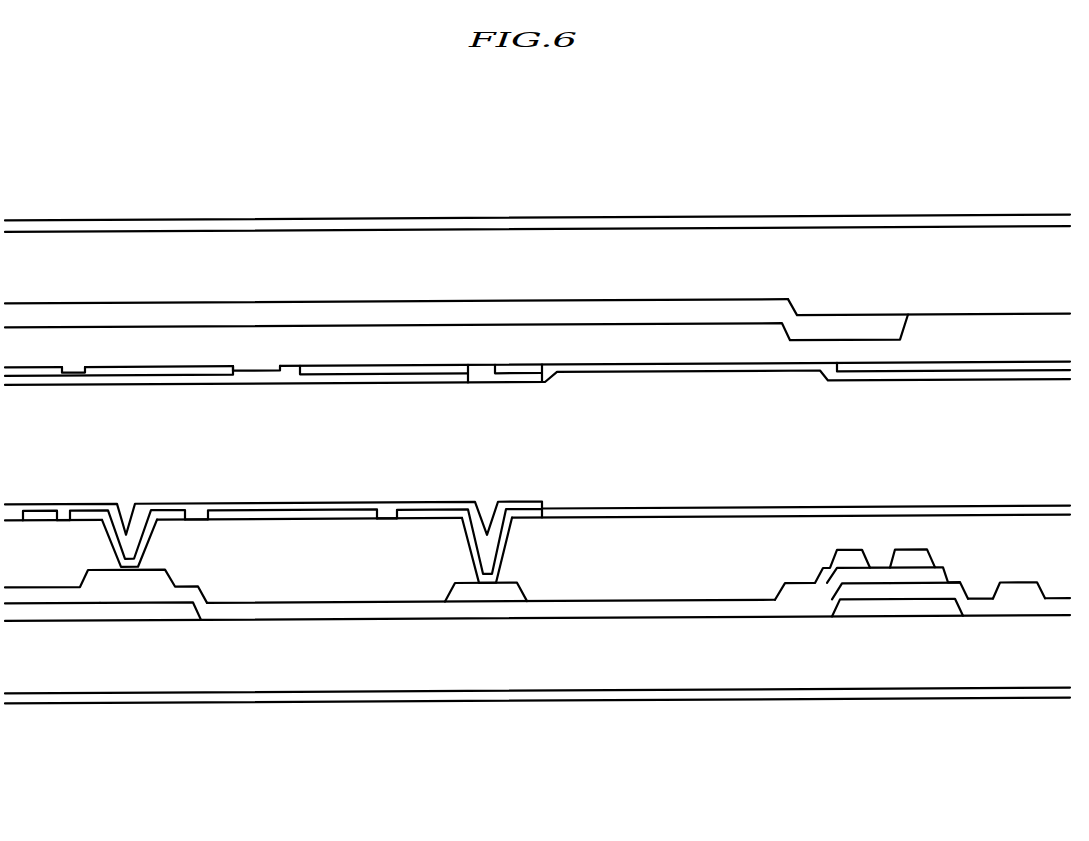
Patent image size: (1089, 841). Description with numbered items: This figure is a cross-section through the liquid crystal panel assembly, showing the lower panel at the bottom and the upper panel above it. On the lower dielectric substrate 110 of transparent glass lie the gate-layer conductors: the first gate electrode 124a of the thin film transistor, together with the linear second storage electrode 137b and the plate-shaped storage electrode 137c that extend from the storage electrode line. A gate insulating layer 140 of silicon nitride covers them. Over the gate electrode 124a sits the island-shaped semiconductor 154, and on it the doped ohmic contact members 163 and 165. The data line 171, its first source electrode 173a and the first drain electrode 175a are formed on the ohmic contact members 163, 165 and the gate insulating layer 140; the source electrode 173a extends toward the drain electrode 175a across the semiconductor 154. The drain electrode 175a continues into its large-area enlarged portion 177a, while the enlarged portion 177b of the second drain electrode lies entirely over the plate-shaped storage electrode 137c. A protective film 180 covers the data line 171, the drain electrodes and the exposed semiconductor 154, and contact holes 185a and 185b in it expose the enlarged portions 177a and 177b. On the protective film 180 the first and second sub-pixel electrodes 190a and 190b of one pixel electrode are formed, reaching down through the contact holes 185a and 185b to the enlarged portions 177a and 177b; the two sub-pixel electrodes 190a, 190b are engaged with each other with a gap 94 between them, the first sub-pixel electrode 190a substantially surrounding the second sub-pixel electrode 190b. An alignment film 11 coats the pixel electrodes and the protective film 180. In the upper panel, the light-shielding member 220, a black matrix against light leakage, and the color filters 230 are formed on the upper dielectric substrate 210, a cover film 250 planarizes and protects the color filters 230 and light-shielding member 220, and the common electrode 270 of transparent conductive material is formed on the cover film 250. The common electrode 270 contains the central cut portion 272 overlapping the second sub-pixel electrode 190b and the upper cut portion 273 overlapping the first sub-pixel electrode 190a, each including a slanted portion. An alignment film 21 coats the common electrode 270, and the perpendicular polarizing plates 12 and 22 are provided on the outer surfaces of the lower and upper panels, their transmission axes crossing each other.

The polarizing plate 22 is at (278, 220).
The dielectric substrate 210 is at (397, 253).
The color filter 230 is at (470, 312).
The light-shielding member 220 is at (932, 305).
The cover film 250 is at (200, 340).
The common electrode 270 is at (35, 375).
The central cut portion 272 is at (64, 373).
The upper cut portion 273 is at (471, 373).
The alignment film 21 is at (700, 371).
The alignment film 11 is at (800, 509).
The first sub-pixel electrode 190a is at (32, 513).
The second sub-pixel electrode 190b is at (160, 513).
The gap 94 is at (61, 513).
The contact hole 185a is at (476, 556).
The contact hole 185b is at (122, 553).
The protective film 180 is at (297, 584).
The enlarged portion 177a is at (497, 593).
The enlarged portion 177b is at (105, 584).
The second storage electrode 137b is at (40, 612).
The plate-shaped storage electrode 137c is at (180, 612).
The gate insulating layer 140 is at (360, 612).
The dielectric substrate 110 is at (610, 665).
The polarizing plate 12 is at (560, 700).
The first gate electrode 124a is at (908, 610).
The island-shaped semiconductor 154 is at (887, 578).
The ohmic contact member 165 is at (862, 575).
The ohmic contact member 163 is at (935, 566).
The first drain electrode 175a is at (822, 584).
The first source electrode 173a is at (917, 560).
The data line 171 is at (1015, 593).